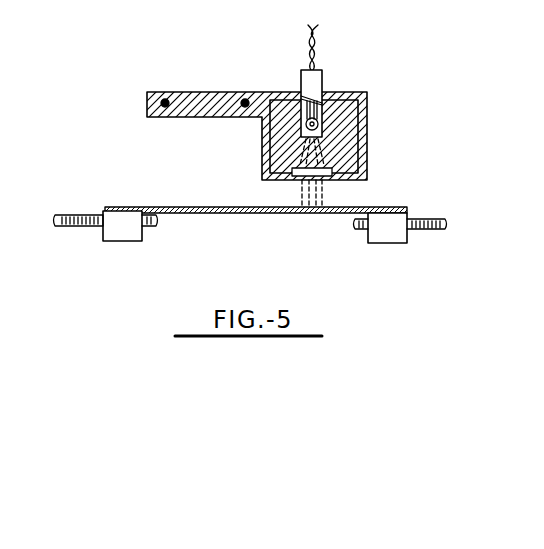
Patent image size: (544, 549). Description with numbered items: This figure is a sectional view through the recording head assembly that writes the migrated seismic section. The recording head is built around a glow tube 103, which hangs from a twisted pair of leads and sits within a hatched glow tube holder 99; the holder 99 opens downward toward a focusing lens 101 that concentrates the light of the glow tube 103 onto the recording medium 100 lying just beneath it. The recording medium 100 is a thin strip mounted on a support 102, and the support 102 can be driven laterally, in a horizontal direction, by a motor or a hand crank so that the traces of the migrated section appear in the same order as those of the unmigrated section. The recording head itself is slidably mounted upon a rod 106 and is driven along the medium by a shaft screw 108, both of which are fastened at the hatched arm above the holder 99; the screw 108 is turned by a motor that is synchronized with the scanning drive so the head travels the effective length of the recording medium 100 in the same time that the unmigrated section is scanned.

The glow tube holder 99 is at (367, 124).
The recording medium 100 is at (215, 206).
The focusing lens 101 is at (323, 178).
The support 102 is at (285, 214).
The glow tube 103 is at (322, 82).
The rod 106 is at (165, 99).
The shaft screw 108 is at (245, 99).